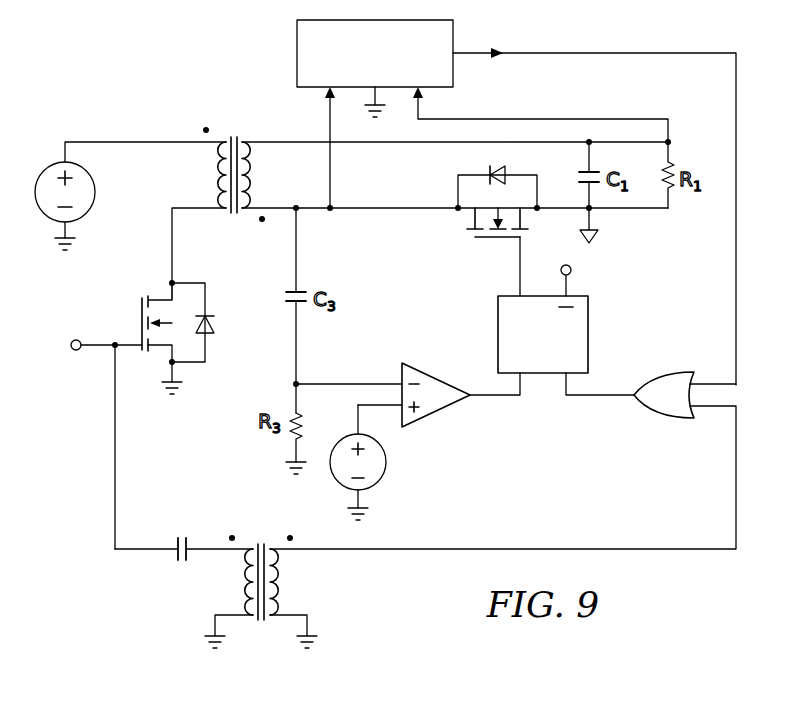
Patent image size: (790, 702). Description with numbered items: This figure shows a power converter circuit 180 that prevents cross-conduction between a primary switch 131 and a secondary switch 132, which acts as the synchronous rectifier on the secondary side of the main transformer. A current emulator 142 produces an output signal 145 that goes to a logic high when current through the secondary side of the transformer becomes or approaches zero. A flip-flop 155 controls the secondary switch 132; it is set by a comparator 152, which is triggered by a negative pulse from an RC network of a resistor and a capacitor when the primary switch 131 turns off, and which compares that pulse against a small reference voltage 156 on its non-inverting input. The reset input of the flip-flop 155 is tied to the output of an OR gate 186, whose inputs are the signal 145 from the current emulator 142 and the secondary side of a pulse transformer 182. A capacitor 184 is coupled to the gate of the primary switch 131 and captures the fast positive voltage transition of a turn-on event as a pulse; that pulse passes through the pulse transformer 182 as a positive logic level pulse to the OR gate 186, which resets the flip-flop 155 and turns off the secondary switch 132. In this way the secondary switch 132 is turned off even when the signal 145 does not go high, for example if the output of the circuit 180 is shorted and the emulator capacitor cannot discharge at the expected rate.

The power converter circuit 180 is at (128, 65).
The primary switch 131 is at (114, 317).
The current emulator 142 is at (297, 50).
The output signal 145 is at (523, 53).
The secondary switch 132 is at (484, 256).
The comparator 152 is at (431, 376).
The reference voltage 156 is at (387, 460).
The flip-flop 155 is at (588, 334).
The OR gate 186 is at (658, 418).
The capacitor 184 is at (181, 532).
The pulse transformer 182 is at (283, 573).